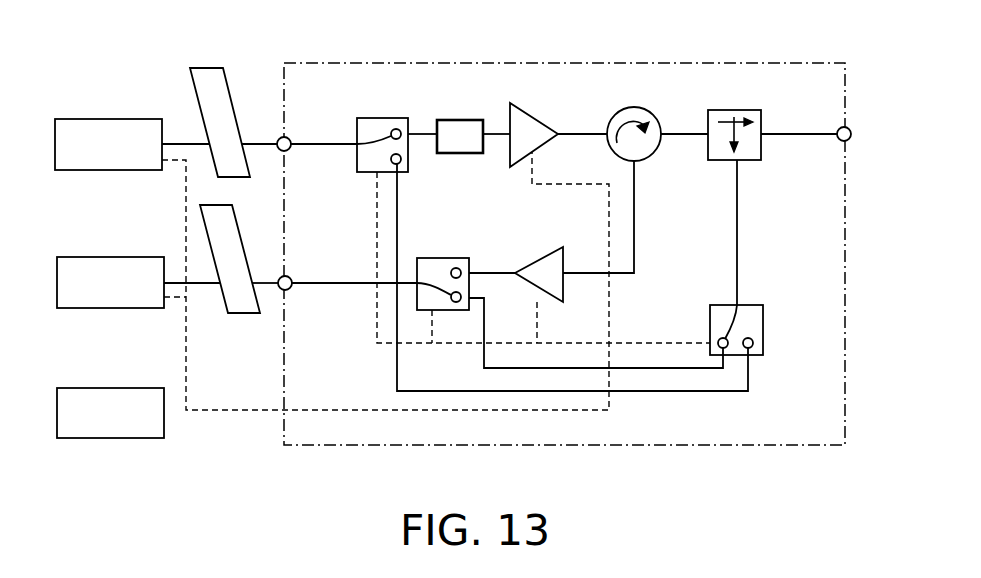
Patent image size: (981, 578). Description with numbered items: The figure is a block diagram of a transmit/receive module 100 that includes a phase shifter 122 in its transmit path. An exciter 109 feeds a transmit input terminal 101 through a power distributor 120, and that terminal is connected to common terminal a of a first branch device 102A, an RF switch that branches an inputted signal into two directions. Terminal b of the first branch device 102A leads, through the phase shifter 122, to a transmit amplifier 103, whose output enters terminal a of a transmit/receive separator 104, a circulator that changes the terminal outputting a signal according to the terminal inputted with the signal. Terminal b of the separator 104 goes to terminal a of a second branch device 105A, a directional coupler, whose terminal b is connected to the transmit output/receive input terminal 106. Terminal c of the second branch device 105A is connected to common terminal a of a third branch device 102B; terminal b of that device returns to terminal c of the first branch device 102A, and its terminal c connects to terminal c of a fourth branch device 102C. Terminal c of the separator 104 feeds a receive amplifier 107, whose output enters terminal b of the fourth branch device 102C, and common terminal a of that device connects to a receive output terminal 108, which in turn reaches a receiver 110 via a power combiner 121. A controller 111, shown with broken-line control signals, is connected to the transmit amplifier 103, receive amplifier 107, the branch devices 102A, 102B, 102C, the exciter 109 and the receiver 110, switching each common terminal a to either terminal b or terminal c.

The transmit/receive module 100 is at (453, 53).
The transmit input terminal 101 is at (287, 137).
The first branch device 102A is at (386, 118).
The third branch device 102B is at (721, 305).
The fourth branch device 102C is at (447, 258).
The transmit amplifier 103 is at (528, 116).
The transmit/receive separator 104 is at (646, 111).
The second branch device 105A is at (733, 110).
The transmit output/receive input terminal 106 is at (849, 128).
The receive amplifier 107 is at (549, 254).
The receive output terminal 108 is at (288, 276).
The exciter 109 is at (110, 119).
The receiver 110 is at (110, 257).
The controller 111 is at (110, 388).
The power distributor 120 is at (213, 68).
The power combiner 121 is at (240, 313).
The phase shifter 122 is at (453, 120).